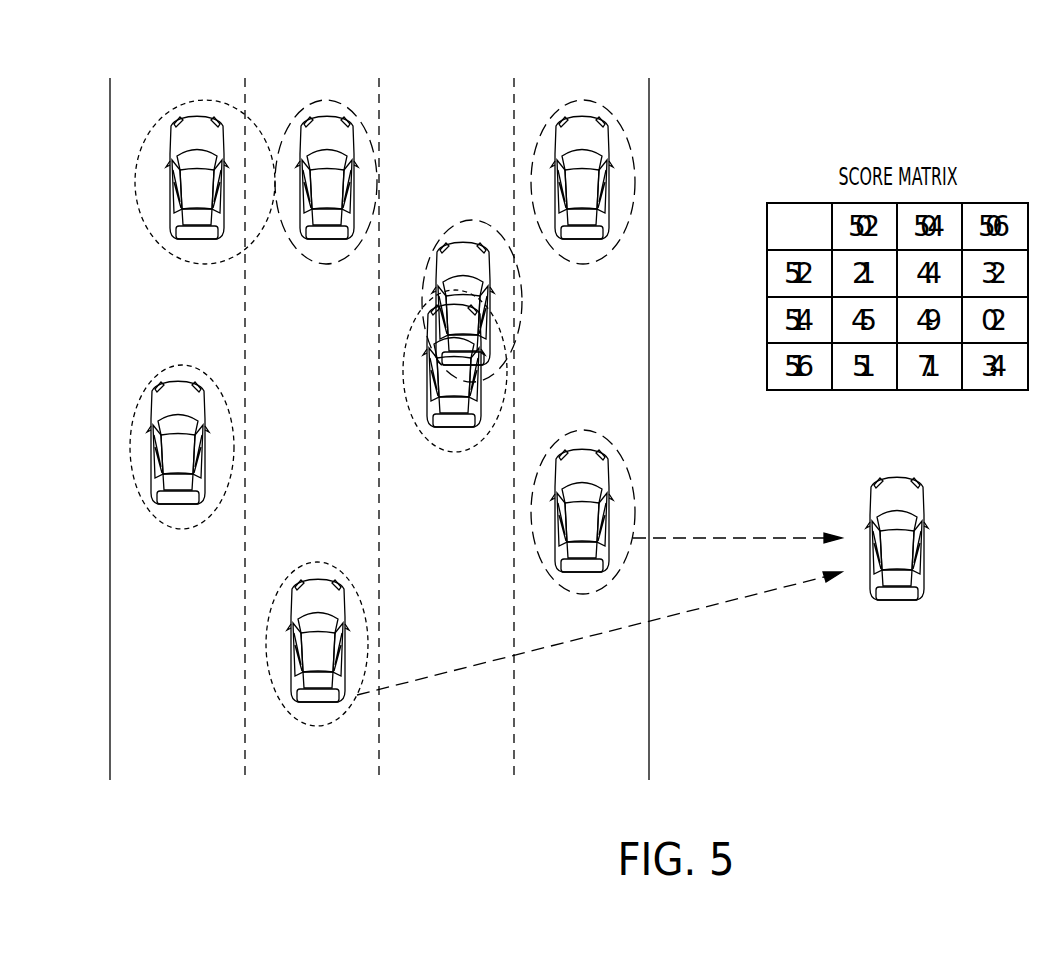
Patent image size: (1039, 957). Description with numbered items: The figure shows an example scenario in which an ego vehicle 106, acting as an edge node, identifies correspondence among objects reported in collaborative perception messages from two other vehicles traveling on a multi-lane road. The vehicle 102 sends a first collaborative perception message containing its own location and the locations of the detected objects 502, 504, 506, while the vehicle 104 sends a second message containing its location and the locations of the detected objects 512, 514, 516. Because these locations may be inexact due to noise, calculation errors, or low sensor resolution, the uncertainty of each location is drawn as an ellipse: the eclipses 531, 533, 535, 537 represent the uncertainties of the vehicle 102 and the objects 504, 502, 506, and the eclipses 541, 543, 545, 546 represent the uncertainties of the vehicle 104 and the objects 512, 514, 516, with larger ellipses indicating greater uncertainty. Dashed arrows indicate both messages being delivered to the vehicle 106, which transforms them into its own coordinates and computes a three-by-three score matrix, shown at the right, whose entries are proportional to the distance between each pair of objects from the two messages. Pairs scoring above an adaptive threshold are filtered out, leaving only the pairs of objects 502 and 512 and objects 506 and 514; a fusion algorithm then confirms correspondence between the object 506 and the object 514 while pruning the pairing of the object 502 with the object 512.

The vehicle 102 is at (318, 705).
The vehicle 104 is at (580, 573).
The vehicle 106 is at (897, 602).
The detected object 502 is at (197, 238).
The detected object 504 is at (178, 503).
The detected object 506 is at (455, 427).
The detected object 512 is at (327, 238).
The detected object 514 is at (440, 245).
The detected object 516 is at (582, 238).
The eclipse 531 is at (318, 562).
The eclipse 533 is at (178, 365).
The eclipse 535 is at (200, 100).
The eclipse 537 is at (425, 433).
The eclipse 541 is at (583, 430).
The eclipse 543 is at (326, 100).
The eclipse 545 is at (462, 221).
The eclipse 546 is at (582, 100).